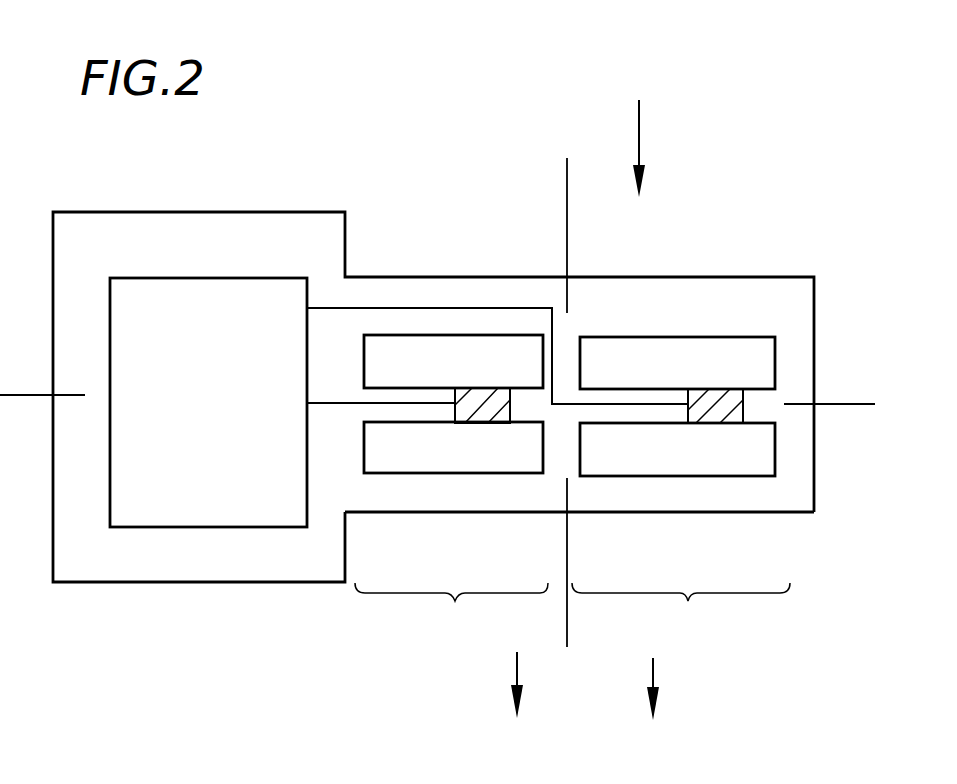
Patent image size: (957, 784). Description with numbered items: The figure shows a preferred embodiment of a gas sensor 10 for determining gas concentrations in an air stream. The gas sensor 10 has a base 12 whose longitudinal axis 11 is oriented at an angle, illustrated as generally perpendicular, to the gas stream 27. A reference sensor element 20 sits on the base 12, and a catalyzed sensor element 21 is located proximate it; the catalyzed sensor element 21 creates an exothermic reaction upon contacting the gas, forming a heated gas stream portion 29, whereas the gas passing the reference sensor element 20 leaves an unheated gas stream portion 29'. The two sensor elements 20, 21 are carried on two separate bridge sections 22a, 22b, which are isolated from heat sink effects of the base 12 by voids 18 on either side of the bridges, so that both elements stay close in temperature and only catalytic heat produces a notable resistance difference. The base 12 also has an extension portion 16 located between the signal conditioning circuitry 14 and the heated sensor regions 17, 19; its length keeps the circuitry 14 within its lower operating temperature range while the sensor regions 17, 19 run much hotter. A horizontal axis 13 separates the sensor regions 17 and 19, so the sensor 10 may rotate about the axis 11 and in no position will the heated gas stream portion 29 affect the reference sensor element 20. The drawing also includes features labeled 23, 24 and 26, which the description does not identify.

The gas sensor 10 is at (316, 158).
The longitudinal axis 11 is at (40, 395).
The base 12 is at (218, 228).
The horizontal axis 13 is at (566, 177).
The signal conditioning circuitry 14 is at (222, 364).
The extension portion 16 is at (483, 503).
The sensor region 17 is at (451, 611).
The voids 18 is at (590, 353).
The sensor region 19 is at (681, 611).
The reference sensor element 20 is at (485, 412).
The catalyzed sensor element 21 is at (698, 403).
The bridge section 22a is at (367, 395).
The bridge section 22b is at (647, 397).
The electrode plates of second sensor 23 is at (573, 381).
The first lead 24 is at (330, 305).
The second lead 26 is at (336, 403).
The gas stream 27 is at (639, 146).
The heated gas stream portion 29 is at (695, 676).
The gas stream portion 29' is at (442, 677).